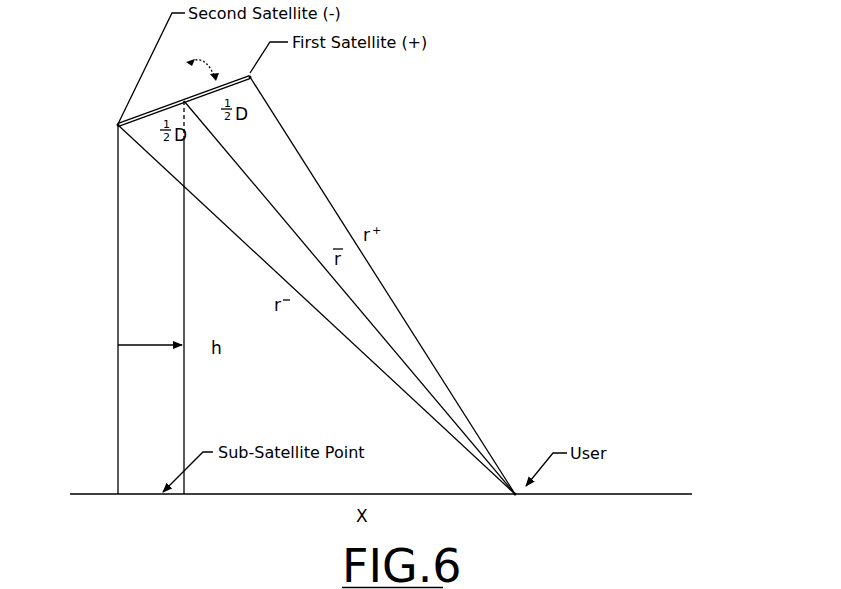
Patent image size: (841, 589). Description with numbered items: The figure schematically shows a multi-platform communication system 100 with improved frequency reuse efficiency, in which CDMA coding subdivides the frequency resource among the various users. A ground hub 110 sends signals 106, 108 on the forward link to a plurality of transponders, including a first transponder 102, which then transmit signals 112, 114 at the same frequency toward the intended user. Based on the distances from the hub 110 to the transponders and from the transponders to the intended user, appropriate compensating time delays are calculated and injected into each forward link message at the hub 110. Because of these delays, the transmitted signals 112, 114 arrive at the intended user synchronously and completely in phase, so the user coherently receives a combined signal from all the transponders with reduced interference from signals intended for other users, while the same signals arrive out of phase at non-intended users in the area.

The multi-platform communication system 100 is at (273, 210).
The first transponder 102 is at (372, 272).
The signal 106 is at (252, 76).
The signal 108 is at (117, 125).
The ground hub 110 is at (517, 490).
The transmitted signal 112 is at (188, 95).
The transmitted signal 114 is at (207, 52).